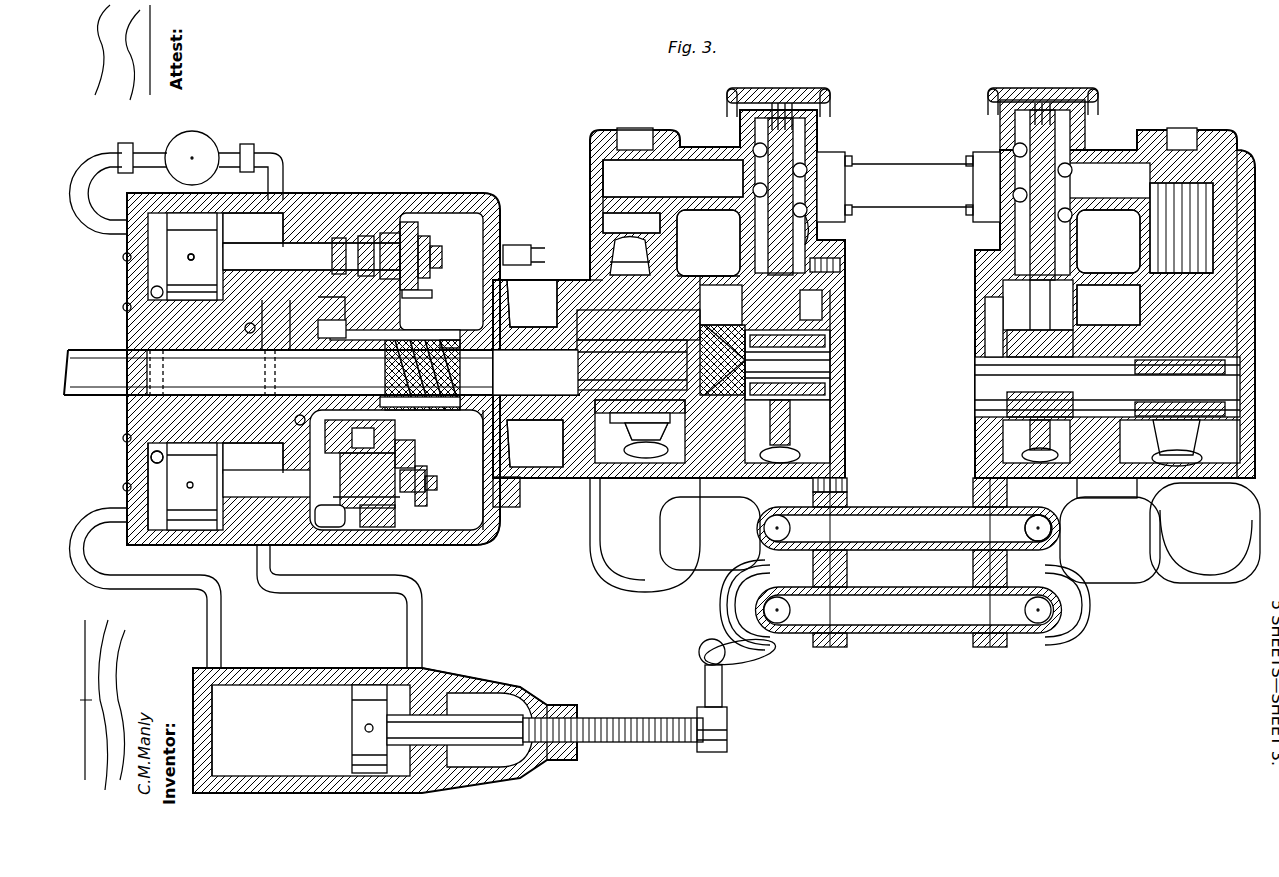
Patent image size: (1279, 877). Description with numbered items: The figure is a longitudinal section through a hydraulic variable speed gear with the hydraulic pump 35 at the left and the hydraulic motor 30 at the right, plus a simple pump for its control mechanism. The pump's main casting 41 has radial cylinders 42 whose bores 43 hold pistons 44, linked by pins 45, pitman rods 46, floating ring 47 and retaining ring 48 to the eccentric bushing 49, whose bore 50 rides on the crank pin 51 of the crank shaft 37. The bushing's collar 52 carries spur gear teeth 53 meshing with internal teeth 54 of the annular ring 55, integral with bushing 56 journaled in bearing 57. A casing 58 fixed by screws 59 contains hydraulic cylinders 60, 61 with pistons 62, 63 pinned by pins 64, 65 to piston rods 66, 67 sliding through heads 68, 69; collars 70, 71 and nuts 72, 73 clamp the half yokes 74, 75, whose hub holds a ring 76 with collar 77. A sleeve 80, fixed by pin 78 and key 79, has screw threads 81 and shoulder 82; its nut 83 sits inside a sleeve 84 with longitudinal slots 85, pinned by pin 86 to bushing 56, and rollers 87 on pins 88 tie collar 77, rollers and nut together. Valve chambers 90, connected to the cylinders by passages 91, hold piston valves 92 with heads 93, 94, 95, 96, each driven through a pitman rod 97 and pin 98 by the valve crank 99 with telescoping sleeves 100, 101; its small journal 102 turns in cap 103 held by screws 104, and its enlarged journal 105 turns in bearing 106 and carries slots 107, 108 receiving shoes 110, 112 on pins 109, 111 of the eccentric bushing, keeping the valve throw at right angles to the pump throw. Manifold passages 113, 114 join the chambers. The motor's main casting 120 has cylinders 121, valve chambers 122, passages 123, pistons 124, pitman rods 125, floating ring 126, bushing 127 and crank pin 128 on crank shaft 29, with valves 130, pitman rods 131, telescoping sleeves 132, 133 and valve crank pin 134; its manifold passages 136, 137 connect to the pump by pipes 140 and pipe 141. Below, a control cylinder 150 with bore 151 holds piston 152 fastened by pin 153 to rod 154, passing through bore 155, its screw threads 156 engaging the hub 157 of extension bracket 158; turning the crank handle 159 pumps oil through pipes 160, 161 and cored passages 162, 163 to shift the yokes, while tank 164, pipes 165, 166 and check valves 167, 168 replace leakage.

The crank shaft 29 is at (1250, 495).
The hydraulic motor 30 is at (1196, 130).
The hydraulic pump 35 is at (600, 130).
The crank shaft 37 is at (106, 380).
The main casting 41 is at (562, 285).
The radial cylinders 42 is at (600, 518).
The bores 43 is at (627, 280).
The pistons 44 is at (600, 180).
The pins 45 is at (612, 223).
The pitman rods 46 is at (622, 247).
The floating ring 47 is at (598, 278).
The retaining ring 48 is at (525, 255).
The eccentric bushing 49 is at (672, 300).
The bore 50 is at (672, 290).
The crank pin 51 is at (702, 300).
The collar 52 is at (550, 305).
The spur gear teeth 53 is at (555, 425).
The internal teeth 54 is at (555, 440).
The annular ring 55 is at (586, 433).
The bushing 56 is at (527, 335).
The bearing 57 is at (514, 440).
The casing 58 is at (483, 545).
The screws 59 is at (522, 508).
The hydraulic cylinder 60 is at (304, 543).
The hydraulic cylinder 61 is at (270, 230).
The piston 62 is at (207, 495).
The piston 63 is at (208, 245).
The pin 64 is at (192, 495).
The pin 65 is at (193, 254).
The piston rod 66 is at (258, 570).
The piston rod 67 is at (280, 255).
The head 68 is at (330, 517).
The head 69 is at (340, 240).
The collar 70 is at (340, 500).
The collar 71 is at (364, 240).
The nut 72 is at (432, 490).
The nut 73 is at (412, 262).
The half yoke 74 is at (375, 505).
The half yoke 75 is at (421, 506).
The ring 76 is at (425, 320).
The collar 77 is at (278, 318).
The pin 78 is at (303, 424).
The key 79 is at (323, 324).
The sleeve 80 is at (330, 430).
The screw threads 81 is at (420, 408).
The shoulder 82 is at (250, 323).
The nut 83 is at (400, 440).
The sleeve 84 is at (480, 425).
The longitudinal slots 85 is at (452, 407).
The pin 86 is at (470, 340).
The rollers 87 is at (412, 450).
The pins 88 is at (425, 472).
The valve chambers 90 is at (740, 578).
The passage 91 is at (700, 175).
The piston valve 92 is at (793, 140).
The head 93 is at (832, 102).
The head 94 is at (803, 175).
The head 95 is at (803, 208).
The head 96 is at (795, 246).
The pitman rod 97 is at (812, 303).
The pin 98 is at (825, 270).
The valve crank 99 is at (843, 397).
The telescoping sleeve 100 is at (800, 334).
The telescoping sleeve 101 is at (795, 352).
The small journal 102 is at (790, 372).
The cap 103 is at (845, 450).
The screws 104 is at (850, 478).
The enlarged journal 105 is at (712, 430).
The bearing 106 is at (712, 445).
The vertical slot 107 is at (712, 413).
The slot 108 is at (710, 395).
The pin 109 is at (738, 318).
The rectangular shoe 110 is at (738, 335).
The pin 111 is at (770, 420).
The rectangular shoe 112 is at (775, 340).
The manifold passage 113 is at (752, 614).
The manifold passage 114 is at (757, 542).
The main casting 120 is at (1110, 470).
The cylinders 121 is at (1215, 530).
The valve chamber 122 is at (1066, 575).
The passage 123 is at (1125, 555).
The pistons 124 is at (1200, 243).
The pitman rods 125 is at (1190, 272).
The floating ring 126 is at (1120, 285).
The bushing 127 is at (1133, 275).
The crank pin 128 is at (1200, 362).
The valves 130 is at (1050, 141).
The pitman rods 131 is at (1030, 309).
The telescoping sleeve 132 is at (1010, 338).
The telescoping sleeve 133 is at (1063, 330).
The valve crank pin 134 is at (977, 402).
The manifold passage 136 is at (1052, 633).
The manifold passage 137 is at (1052, 528).
The pipes 140 is at (900, 633).
The pipe 141 is at (902, 549).
The cylinder 150 is at (290, 680).
The bore 151 is at (260, 685).
The piston 152 is at (373, 705).
The pin 153 is at (366, 725).
The rod 154 is at (472, 730).
The bore 155 is at (450, 693).
The screw threads 156 is at (602, 733).
The hub 157 is at (560, 717).
The extension bracket 158 is at (530, 703).
The crank handle 159 is at (725, 718).
The pipe 160 is at (222, 620).
The pipe 161 is at (423, 615).
The cored passage 162 is at (274, 433).
The cored passage 163 is at (151, 455).
The tank 164 is at (200, 150).
The connecting pipe 165 is at (274, 168).
The connecting pipe 166 is at (110, 178).
The check valve 167 is at (256, 155).
The check valve 168 is at (137, 160).